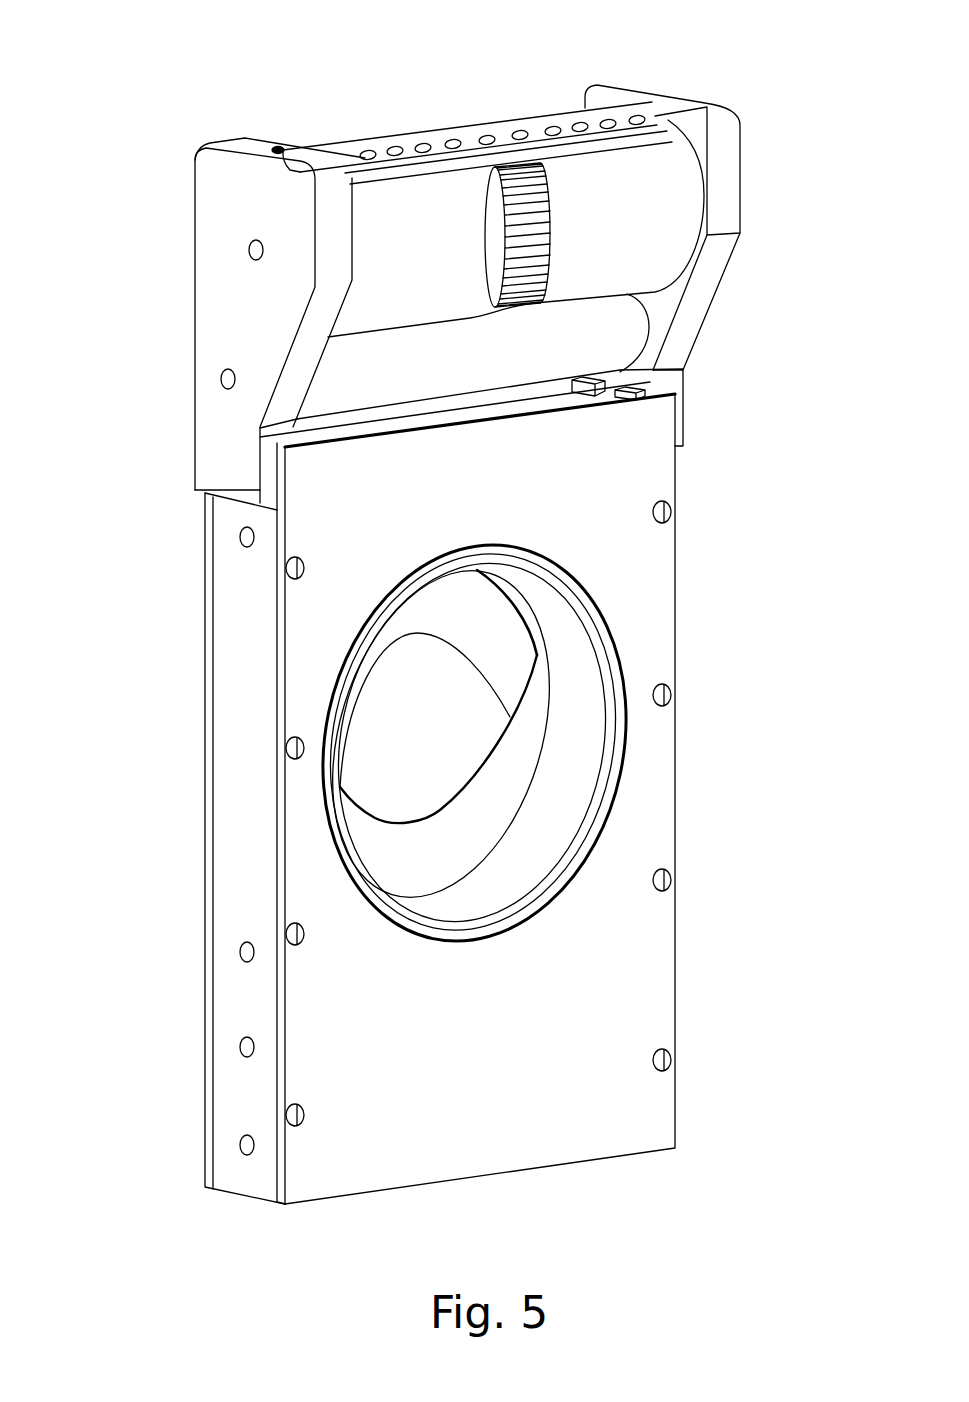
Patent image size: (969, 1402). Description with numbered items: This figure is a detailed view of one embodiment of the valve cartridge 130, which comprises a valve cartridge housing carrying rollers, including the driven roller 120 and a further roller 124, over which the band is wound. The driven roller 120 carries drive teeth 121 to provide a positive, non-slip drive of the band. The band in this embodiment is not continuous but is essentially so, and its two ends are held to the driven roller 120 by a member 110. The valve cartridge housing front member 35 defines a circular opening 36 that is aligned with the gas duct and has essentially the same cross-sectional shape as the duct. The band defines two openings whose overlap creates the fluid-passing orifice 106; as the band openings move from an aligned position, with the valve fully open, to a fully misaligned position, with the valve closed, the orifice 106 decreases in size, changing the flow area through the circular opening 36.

The valve cartridge housing front member 35 is at (648, 977).
The circular opening 36 is at (600, 747).
The fluid-passing orifice 106 is at (437, 749).
The member 110 is at (388, 147).
The driven roller 120 is at (680, 192).
The drive teeth 121 is at (522, 167).
The roller 124 is at (617, 337).
The cartridge 130 is at (727, 273).